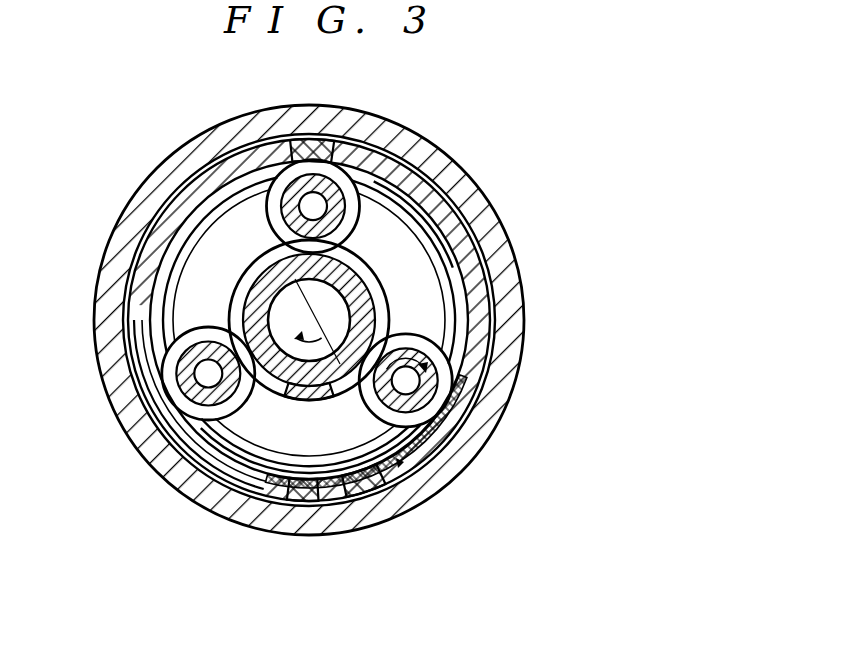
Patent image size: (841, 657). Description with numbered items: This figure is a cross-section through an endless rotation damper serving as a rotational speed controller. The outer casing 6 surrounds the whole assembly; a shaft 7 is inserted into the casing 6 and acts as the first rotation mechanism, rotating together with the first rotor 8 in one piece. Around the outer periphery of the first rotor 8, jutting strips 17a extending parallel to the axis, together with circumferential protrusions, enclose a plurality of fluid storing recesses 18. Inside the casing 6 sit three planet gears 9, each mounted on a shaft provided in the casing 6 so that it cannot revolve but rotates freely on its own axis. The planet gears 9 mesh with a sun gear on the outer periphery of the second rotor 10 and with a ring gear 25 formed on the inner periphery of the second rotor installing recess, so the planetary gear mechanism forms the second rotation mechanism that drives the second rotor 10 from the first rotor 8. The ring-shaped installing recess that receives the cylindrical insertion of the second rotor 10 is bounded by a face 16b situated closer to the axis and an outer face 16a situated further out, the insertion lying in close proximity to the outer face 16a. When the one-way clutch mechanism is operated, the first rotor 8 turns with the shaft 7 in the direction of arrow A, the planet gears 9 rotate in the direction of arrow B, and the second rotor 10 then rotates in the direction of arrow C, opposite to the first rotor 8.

The casing 6 is at (375, 128).
The fluid storing recesses 18 is at (237, 153).
The planet gear 9 is at (278, 160).
The jutting strips 17a is at (317, 140).
The first rotor 8 is at (438, 203).
The second rotor 10 is at (280, 310).
The shaft 7 is at (283, 310).
The ring gear 25 is at (396, 470).
The one face of the ring-shaped installing recess 16a is at (372, 487).
The face of the ring-shaped installing recess 16b is at (301, 478).
The arrow A is at (458, 432).
The arrow B is at (417, 345).
The arrow C is at (322, 385).